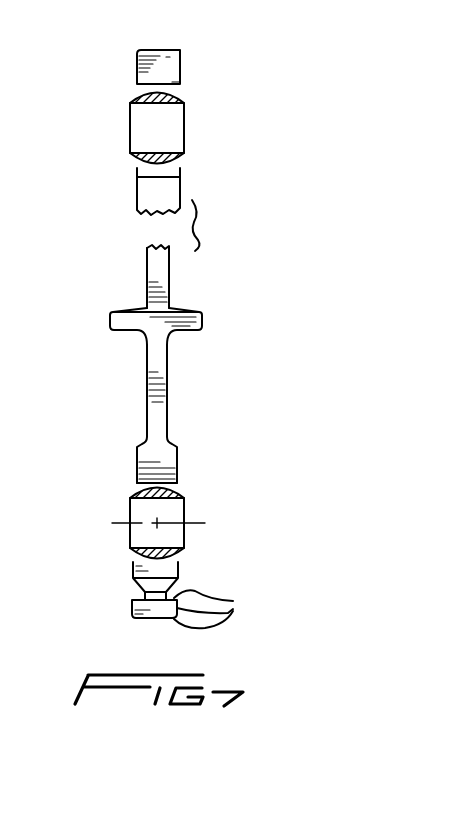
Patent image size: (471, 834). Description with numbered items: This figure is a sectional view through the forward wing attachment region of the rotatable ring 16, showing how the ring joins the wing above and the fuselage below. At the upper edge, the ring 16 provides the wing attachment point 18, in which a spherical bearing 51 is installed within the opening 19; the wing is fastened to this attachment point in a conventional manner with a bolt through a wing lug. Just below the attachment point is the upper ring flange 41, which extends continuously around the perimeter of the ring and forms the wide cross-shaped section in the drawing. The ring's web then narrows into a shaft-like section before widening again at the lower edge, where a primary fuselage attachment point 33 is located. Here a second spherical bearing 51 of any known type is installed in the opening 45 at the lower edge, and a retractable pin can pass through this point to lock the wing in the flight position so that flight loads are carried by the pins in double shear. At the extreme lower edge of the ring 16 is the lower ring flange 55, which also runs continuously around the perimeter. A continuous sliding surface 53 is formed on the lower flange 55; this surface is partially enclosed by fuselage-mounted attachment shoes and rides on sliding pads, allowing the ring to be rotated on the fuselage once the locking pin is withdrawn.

The forward wing attachment point 18 is at (172, 62).
The spherical bearing 51 is at (183, 96).
The opening 19 is at (140, 183).
The upper ring flange 41 is at (188, 316).
The ring 16 is at (167, 398).
The opening 45 is at (152, 470).
The primary fuselage attachment point 33 is at (152, 518).
The lower ring flange 55 is at (131, 603).
The sliding surface 53 is at (219, 607).